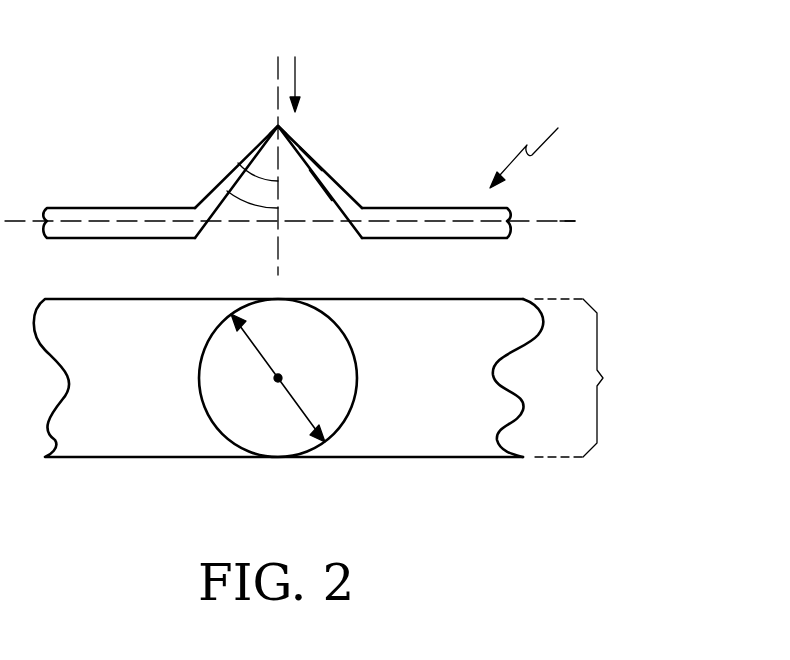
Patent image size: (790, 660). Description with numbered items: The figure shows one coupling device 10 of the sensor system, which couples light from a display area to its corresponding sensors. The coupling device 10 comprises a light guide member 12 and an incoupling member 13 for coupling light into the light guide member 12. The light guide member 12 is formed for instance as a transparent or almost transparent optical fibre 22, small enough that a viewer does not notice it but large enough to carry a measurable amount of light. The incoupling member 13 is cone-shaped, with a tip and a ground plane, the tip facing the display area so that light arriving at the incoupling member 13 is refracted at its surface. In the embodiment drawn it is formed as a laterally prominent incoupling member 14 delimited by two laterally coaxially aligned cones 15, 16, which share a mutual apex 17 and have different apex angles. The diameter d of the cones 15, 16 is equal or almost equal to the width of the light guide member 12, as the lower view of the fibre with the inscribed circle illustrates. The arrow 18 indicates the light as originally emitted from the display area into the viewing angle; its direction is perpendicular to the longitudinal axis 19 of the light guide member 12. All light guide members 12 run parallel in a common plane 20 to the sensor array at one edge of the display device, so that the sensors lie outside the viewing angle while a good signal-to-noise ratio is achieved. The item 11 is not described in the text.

The coupling device 10 is at (554, 143).
The component / sheet metal part 11 is at (554, 143).
The light guide member 12 is at (278, 334).
The optical fibre 22 is at (278, 334).
The incoupling member 13 is at (312, 325).
The laterally prominent incoupling member 14 is at (312, 325).
The cone 15 is at (315, 163).
The cone 16 is at (332, 200).
The mutual apex 17 is at (278, 126).
The arrow 18 is at (293, 70).
The longitudinal axis 19 is at (623, 253).
The common plane 20 is at (623, 253).
The diameter d is at (255, 340).